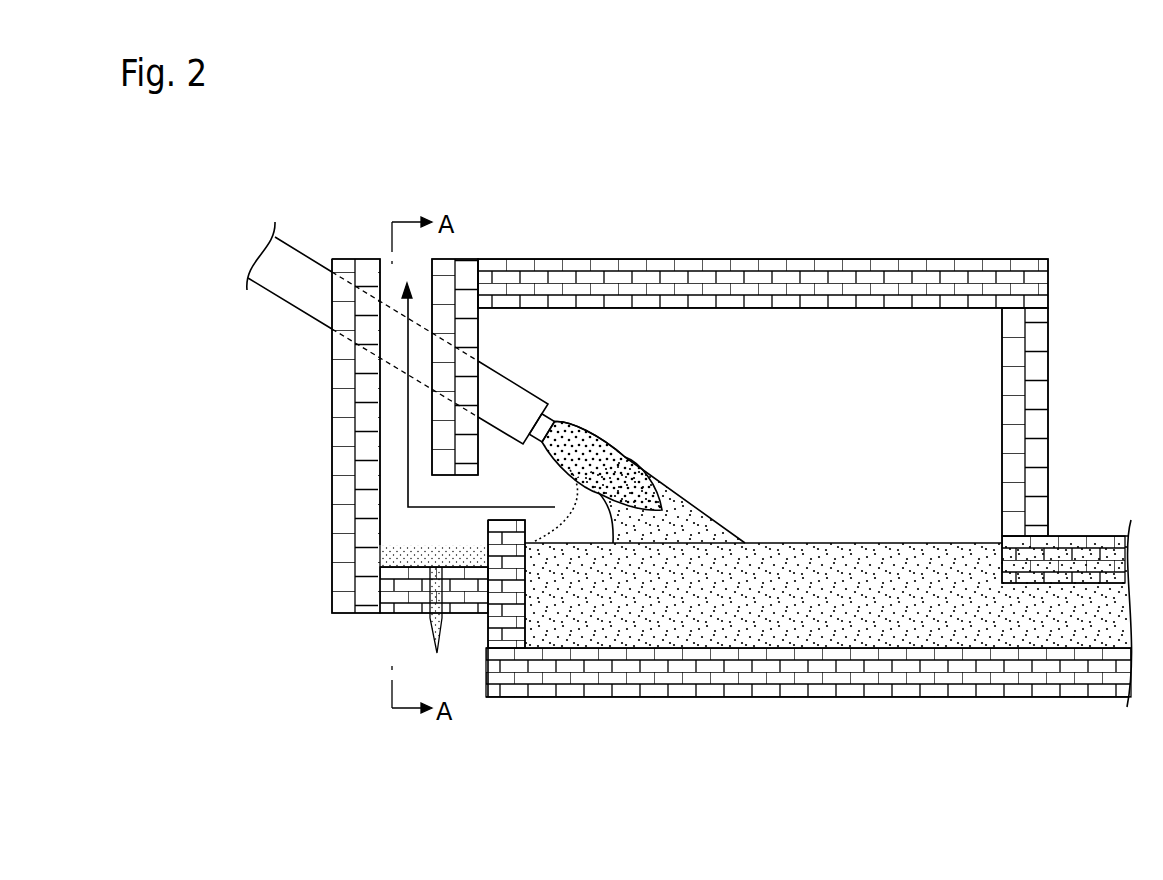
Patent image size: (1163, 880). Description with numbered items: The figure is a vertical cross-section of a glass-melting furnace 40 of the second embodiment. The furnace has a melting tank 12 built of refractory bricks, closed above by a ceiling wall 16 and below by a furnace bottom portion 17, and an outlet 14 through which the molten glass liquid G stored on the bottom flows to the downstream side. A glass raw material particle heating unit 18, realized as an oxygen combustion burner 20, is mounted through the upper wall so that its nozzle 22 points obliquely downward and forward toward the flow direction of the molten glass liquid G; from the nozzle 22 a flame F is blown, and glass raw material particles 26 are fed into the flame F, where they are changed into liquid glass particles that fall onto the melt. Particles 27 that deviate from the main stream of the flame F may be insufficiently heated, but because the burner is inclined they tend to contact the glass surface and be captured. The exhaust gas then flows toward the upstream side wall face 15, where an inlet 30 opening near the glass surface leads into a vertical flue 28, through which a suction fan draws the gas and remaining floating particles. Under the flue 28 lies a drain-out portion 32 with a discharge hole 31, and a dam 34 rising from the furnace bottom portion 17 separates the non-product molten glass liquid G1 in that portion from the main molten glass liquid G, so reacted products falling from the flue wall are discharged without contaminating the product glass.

The melting tank 12 is at (1054, 273).
The outlet 14 is at (1070, 537).
The upstream side wall face 15 is at (470, 336).
The ceiling wall 16 is at (818, 262).
The furnace bottom portion 17 is at (650, 677).
The glass raw material particle heating unit 18 is at (251, 236).
The oxygen combustion burner 20 is at (302, 262).
The nozzle 22 is at (546, 416).
The glass raw material particles 26 is at (627, 460).
The particles deviated from the main stream 27 is at (572, 508).
The flue 28 is at (388, 399).
The inlet 30 is at (474, 487).
The discharge hole 31 is at (428, 585).
The drain-out portion 32 is at (426, 538).
The dam 34 is at (503, 525).
The glass-melting furnace 40 is at (980, 220).
The flame F is at (607, 440).
The molten glass liquid G is at (722, 633).
The non-product molten glass liquid G1 is at (402, 545).